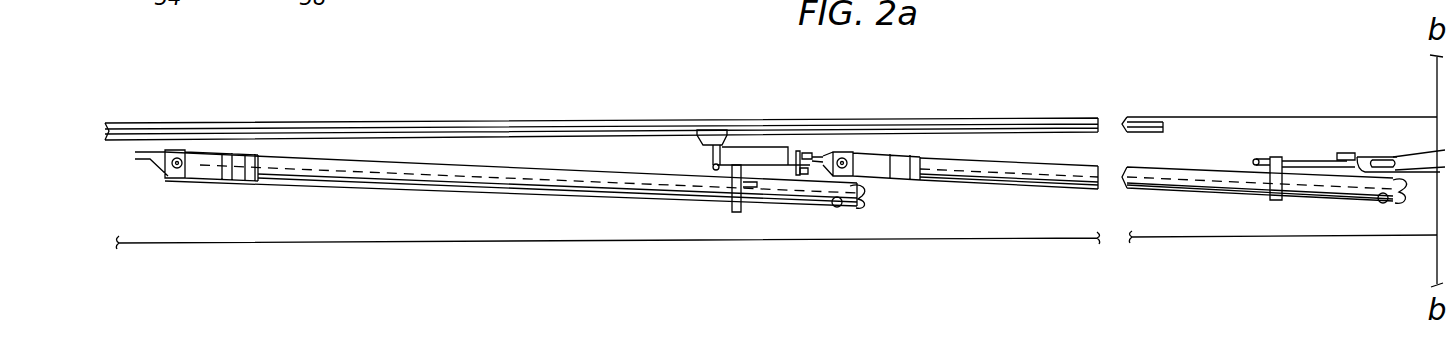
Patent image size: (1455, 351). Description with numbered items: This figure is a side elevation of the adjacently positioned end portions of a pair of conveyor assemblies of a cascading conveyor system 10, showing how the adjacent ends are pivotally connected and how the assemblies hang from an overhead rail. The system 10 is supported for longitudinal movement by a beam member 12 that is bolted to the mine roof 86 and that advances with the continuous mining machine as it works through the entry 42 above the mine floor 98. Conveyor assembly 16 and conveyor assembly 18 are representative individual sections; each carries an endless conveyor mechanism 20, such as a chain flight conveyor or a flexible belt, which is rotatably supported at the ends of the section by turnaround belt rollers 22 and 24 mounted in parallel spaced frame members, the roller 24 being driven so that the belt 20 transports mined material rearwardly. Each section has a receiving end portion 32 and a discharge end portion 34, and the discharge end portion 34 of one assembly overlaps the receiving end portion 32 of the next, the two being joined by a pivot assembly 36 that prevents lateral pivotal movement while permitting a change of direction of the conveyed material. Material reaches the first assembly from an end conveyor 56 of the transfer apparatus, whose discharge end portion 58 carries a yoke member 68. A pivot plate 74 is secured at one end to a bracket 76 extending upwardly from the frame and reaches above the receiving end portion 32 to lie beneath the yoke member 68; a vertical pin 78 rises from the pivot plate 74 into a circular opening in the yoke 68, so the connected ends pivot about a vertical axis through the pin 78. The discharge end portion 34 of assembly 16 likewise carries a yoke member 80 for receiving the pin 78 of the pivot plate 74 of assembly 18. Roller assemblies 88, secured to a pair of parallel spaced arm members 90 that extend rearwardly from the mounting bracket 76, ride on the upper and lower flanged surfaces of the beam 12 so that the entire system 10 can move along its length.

The cascading conveyor system 10 is at (918, 213).
The beam member 12 is at (986, 124).
The conveyor assembly 16 is at (1084, 163).
The conveyor assembly 18 is at (580, 146).
The endless conveyor mechanism 20 is at (352, 167).
The turnaround belt roller 22 is at (836, 208).
The turnaround belt roller 24 is at (176, 168).
The receiving end portion 32 is at (855, 189).
The discharge end portion 34 is at (199, 147).
The pivot assembly 36 is at (778, 160).
The entry 42 is at (315, 237).
The end conveyor 56 is at (1415, 153).
The discharge end portion 58 is at (1385, 160).
The yoke member 68 is at (1347, 153).
The pivot plate 74 is at (790, 150).
The bracket 76 is at (736, 204).
The vertical pin 78 is at (805, 151).
The yoke member 80 is at (821, 152).
The mine roof 86 is at (1220, 119).
The roller assembly 88 is at (692, 129).
The arm member 90 is at (713, 169).
The mine floor 98 is at (480, 242).